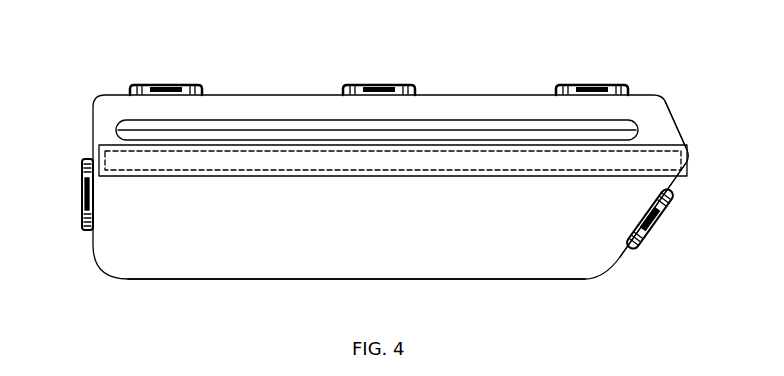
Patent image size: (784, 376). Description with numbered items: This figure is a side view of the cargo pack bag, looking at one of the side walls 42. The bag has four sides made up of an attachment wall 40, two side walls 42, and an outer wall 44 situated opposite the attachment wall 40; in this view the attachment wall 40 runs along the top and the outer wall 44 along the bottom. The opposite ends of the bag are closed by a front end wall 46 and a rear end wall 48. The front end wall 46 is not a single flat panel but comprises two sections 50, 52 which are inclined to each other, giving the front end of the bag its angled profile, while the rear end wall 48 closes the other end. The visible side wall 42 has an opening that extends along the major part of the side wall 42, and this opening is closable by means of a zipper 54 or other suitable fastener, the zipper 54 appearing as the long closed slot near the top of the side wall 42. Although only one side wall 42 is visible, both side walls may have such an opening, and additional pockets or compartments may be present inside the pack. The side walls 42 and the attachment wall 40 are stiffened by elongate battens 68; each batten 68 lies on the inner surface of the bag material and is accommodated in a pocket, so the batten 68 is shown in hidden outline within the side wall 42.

The attachment wall 40 is at (480, 94).
The side wall 42 is at (205, 228).
The outer wall 44 is at (212, 280).
The front end wall 46 is at (678, 176).
The rear end wall 48 is at (93, 247).
The first section of front end wall 50 is at (678, 128).
The second section of front end wall 52 is at (620, 257).
The zipper 54 is at (630, 130).
The batten 68 is at (472, 165).